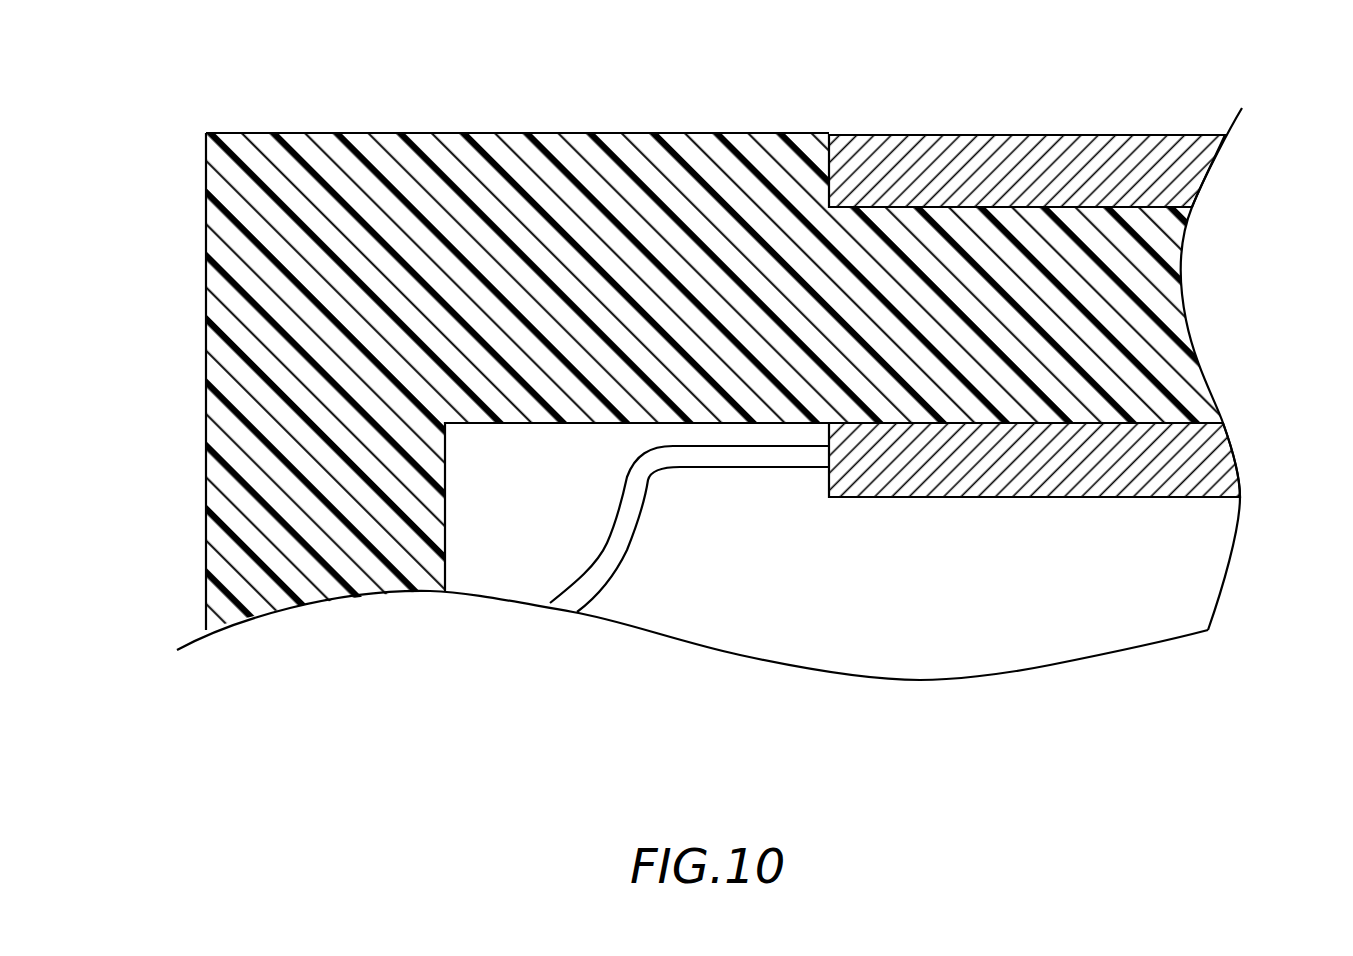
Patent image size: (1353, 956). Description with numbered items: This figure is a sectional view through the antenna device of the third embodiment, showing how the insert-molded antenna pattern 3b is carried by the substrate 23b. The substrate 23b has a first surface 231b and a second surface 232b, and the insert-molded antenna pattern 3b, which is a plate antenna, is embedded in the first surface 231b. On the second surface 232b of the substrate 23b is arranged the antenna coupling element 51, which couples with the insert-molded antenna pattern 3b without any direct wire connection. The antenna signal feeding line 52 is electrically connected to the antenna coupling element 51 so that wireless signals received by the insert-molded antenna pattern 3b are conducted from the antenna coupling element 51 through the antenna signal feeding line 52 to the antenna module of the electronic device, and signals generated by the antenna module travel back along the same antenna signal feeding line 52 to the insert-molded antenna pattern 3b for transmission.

The substrate 23b is at (218, 368).
The first surface 231b is at (350, 133).
The second surface 232b is at (510, 423).
The insert-molded antenna pattern 3b is at (897, 147).
The antenna coupling element 51 is at (1236, 455).
The antenna signal feeding line 52 is at (743, 460).